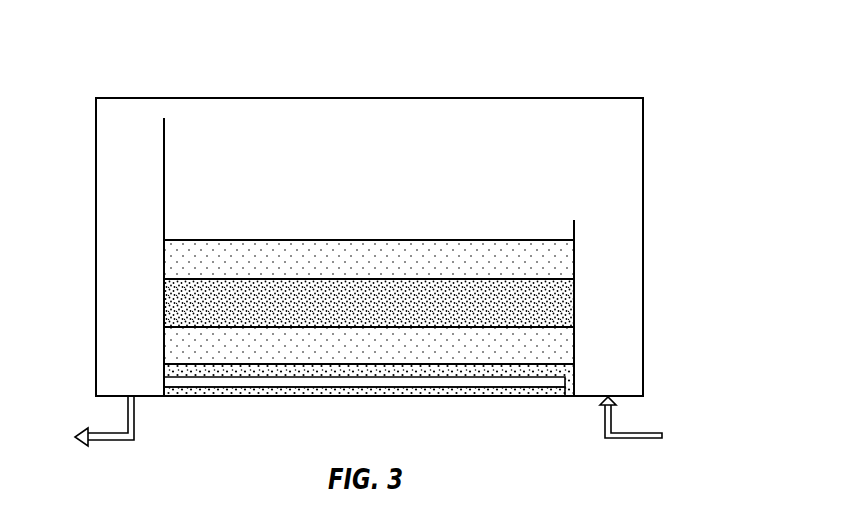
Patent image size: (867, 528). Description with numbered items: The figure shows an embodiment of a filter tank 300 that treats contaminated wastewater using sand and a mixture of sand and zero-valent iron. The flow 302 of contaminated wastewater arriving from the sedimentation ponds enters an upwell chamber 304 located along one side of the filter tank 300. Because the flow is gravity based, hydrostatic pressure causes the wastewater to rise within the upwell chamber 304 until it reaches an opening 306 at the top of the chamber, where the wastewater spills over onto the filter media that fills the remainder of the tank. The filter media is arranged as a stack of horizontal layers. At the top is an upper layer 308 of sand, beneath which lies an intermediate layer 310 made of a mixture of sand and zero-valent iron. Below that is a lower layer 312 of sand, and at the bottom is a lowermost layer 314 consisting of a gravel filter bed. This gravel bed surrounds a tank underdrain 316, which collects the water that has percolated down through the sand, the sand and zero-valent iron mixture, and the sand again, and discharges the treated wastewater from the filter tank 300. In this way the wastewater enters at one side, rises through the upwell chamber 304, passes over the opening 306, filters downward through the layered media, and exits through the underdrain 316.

The filter tank 300 is at (168, 51).
The flow 302 is at (637, 432).
The upwell chamber 304 is at (620, 291).
The opening 306 is at (573, 157).
The upper layer 308 is at (164, 260).
The intermediate layer 310 is at (164, 303).
The lower layer 312 is at (164, 346).
The lowermost layer 314 is at (164, 372).
The tank underdrain 316 is at (247, 381).